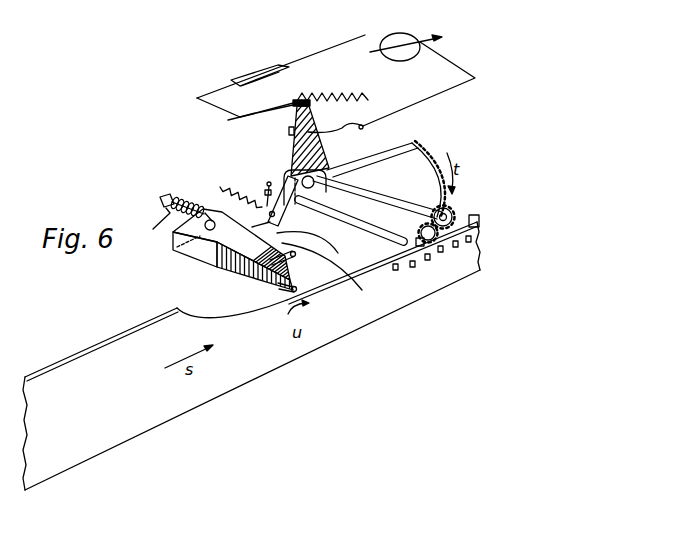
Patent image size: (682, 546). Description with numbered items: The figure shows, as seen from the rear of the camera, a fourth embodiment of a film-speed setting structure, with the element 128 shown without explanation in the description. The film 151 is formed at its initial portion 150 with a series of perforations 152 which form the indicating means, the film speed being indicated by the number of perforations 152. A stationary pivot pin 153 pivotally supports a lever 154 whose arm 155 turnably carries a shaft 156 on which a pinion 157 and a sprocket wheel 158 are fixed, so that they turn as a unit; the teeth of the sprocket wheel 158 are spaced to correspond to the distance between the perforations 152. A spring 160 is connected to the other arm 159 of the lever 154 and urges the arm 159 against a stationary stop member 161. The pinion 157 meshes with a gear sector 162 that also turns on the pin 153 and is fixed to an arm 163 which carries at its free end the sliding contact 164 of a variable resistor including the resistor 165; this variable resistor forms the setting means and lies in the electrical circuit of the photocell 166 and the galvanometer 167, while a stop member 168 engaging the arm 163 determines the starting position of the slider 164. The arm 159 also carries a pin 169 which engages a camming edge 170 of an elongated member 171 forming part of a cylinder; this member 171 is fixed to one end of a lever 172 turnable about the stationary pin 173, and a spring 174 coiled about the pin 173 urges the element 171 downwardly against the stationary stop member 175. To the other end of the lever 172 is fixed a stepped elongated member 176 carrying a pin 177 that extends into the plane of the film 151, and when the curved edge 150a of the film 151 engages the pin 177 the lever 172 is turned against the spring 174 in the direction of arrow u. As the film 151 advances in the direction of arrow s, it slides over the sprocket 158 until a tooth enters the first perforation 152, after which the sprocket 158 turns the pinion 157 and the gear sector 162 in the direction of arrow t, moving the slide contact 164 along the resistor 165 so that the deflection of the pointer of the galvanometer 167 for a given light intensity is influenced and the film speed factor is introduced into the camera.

The keyboard 128 is at (110, 10).
The initial portion 150 is at (358, 322).
The curved edge 150a is at (207, 317).
The film 151 is at (160, 415).
The perforations 152 is at (427, 262).
The stationary pivot pin 153 is at (312, 192).
The lever 154 is at (342, 163).
The arm 155 is at (384, 190).
The shaft 156 is at (456, 211).
The pinion 157 is at (466, 220).
The sprocket wheel 158 is at (477, 223).
The arm 159 is at (285, 206).
The spring 160 is at (234, 179).
The stationary stop member 161 is at (268, 187).
The gear sector 162 is at (420, 157).
The arm 163 is at (303, 156).
The sliding contact 164 is at (229, 120).
The resistor 165 is at (346, 95).
The photocell 166 is at (257, 75).
The galvanometer 167 is at (405, 35).
The stop member 168 is at (288, 132).
The pin 169 is at (324, 249).
The camming edge 170 is at (278, 240).
The elongated member 171 is at (208, 221).
The lever 172 is at (183, 197).
The stationary pin 173 is at (163, 200).
The spring 174 is at (156, 234).
The stationary stop member 175 is at (294, 256).
The stepped elongated member 176 is at (200, 258).
The pin 177 is at (283, 298).